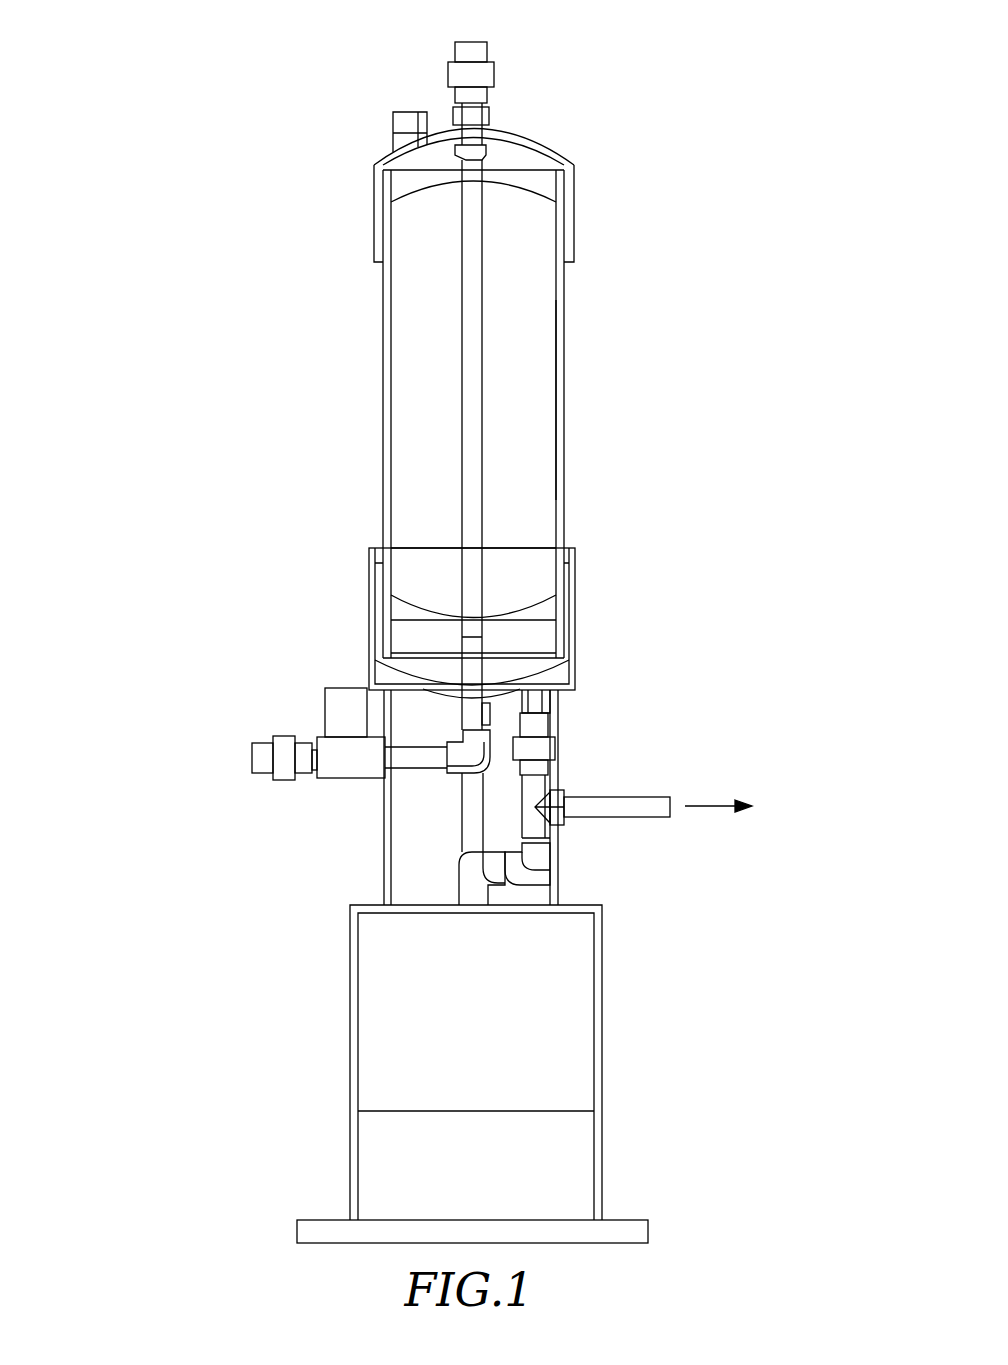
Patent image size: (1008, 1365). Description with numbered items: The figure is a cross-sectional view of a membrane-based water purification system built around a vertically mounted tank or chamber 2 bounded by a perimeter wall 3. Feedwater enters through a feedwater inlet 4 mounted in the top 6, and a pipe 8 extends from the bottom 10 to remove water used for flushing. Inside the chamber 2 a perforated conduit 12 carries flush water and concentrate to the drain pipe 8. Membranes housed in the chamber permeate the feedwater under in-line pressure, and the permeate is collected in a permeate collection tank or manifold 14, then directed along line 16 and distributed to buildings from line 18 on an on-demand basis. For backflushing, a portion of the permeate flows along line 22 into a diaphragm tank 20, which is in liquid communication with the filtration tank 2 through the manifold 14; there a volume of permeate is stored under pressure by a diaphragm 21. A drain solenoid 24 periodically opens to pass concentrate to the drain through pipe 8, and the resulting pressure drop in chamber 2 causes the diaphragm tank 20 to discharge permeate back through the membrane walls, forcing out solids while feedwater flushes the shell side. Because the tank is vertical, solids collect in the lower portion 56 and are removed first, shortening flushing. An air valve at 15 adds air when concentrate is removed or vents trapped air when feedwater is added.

The tank or chamber 2 is at (383, 300).
The perimeter wall 3 is at (392, 582).
The feedwater inlet 4 is at (455, 50).
The top 6 is at (537, 130).
The pipe 8 is at (268, 745).
The bottom 10 is at (440, 696).
The perforated conduit 12 is at (473, 423).
The permeate collection tank or manifold 14 is at (527, 665).
The air valve 15 is at (402, 112).
The line 16 is at (548, 748).
The line 18 is at (632, 797).
The diaphragm tank 20 is at (602, 1030).
The diaphragm 21 is at (470, 1111).
The line 22 is at (540, 865).
The drain solenoid 24 is at (345, 779).
The lower portion 56 is at (548, 523).